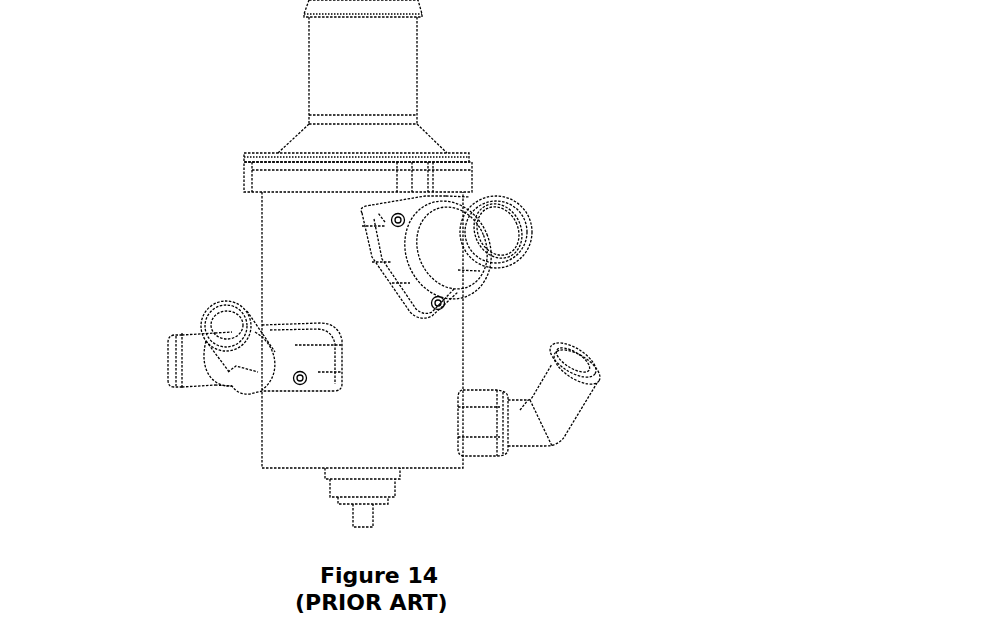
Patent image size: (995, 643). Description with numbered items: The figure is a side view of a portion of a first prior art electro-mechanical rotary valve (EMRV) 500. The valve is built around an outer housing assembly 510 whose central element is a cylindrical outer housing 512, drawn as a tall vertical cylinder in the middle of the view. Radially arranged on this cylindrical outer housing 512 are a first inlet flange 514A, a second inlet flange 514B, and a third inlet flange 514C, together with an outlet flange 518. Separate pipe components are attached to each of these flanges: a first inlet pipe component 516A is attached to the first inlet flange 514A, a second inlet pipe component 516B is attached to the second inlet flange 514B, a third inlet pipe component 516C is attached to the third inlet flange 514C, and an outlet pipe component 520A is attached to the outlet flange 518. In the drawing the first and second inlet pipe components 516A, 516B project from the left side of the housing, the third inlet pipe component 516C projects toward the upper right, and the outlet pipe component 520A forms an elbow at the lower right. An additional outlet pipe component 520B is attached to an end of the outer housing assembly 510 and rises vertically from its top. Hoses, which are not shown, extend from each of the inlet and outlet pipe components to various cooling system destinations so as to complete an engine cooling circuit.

The electro-mechanical rotary valve 500 is at (527, 70).
The outer housing assembly 510 is at (262, 219).
The cylindrical outer housing 512 is at (270, 268).
The first inlet flange 514A is at (232, 381).
The second inlet flange 514B is at (323, 383).
The third inlet flange 514C is at (453, 287).
The first inlet pipe component 516A is at (170, 367).
The second inlet pipe component 516B is at (208, 314).
The third inlet pipe component 516C is at (520, 208).
The outlet flange 518 is at (478, 394).
The outlet pipe component 520A is at (593, 357).
The additional outlet pipe component 520B is at (315, 32).